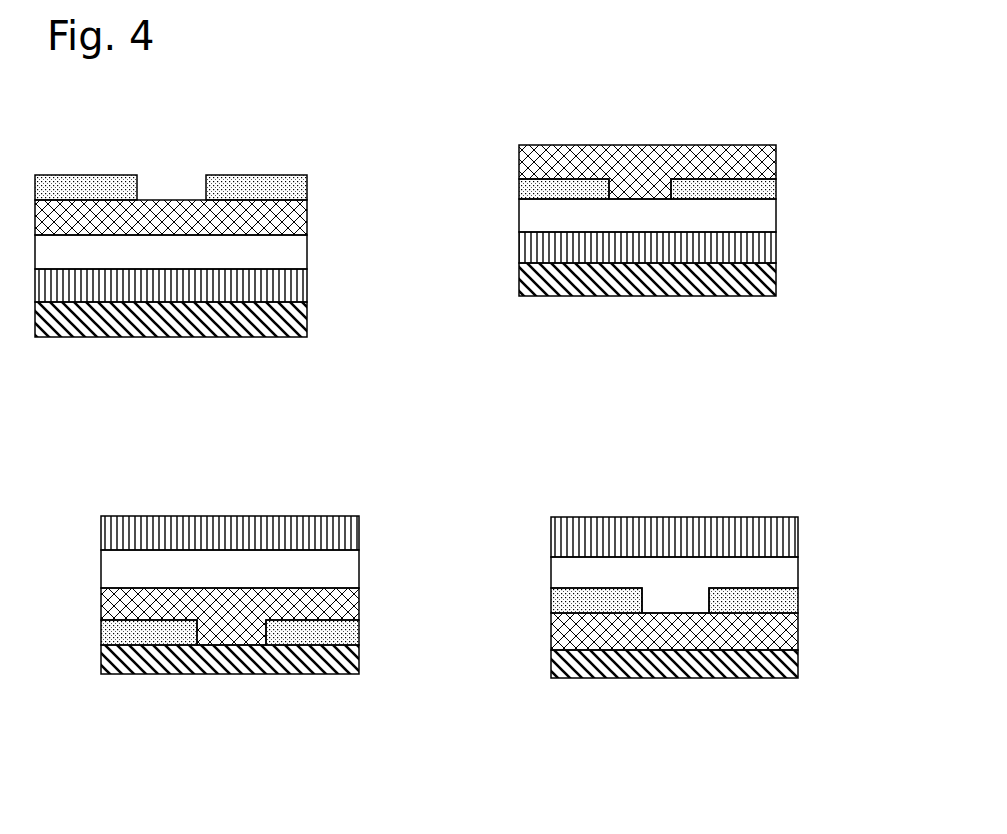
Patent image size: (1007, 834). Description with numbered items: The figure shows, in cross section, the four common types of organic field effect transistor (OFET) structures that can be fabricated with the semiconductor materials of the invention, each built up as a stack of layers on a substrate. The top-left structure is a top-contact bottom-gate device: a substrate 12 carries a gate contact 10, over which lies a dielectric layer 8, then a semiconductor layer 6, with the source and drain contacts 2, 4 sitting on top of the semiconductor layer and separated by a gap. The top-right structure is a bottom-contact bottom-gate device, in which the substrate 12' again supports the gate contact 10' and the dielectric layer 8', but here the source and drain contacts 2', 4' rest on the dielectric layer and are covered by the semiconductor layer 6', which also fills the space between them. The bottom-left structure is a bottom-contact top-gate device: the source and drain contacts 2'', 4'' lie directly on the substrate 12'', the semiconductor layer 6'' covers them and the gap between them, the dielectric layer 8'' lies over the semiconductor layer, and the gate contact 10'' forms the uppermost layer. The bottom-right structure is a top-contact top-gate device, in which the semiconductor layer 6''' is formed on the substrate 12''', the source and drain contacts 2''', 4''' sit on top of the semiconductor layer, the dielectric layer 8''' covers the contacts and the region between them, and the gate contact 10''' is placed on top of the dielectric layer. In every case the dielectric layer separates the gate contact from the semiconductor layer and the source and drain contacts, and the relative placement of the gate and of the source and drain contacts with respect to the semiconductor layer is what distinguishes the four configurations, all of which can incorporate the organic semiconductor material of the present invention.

The source contact 2 is at (86, 145).
The drain contact 4 is at (266, 148).
The semiconductor layer 6 is at (220, 208).
The dielectric layer 8 is at (220, 257).
The gate contact 10 is at (225, 295).
The substrate 12 is at (171, 360).
The source contact 2' is at (541, 144).
The drain contact 4' is at (775, 181).
The semiconductor layer 6' is at (647, 148).
The dielectric layer 8' is at (699, 224).
The gate contact 10' is at (705, 257).
The substrate 12' is at (647, 320).
The source contact 2'' is at (113, 611).
The drain contact 4'' is at (343, 638).
The semiconductor layer 6'' is at (260, 605).
The dielectric layer 8'' is at (260, 557).
The gate contact 10'' is at (230, 506).
The substrate 12'' is at (230, 682).
The source contact 2''' is at (563, 599).
The drain contact 4''' is at (792, 593).
The semiconductor layer 6''' is at (713, 624).
The dielectric layer 8''' is at (713, 565).
The gate contact 10''' is at (674, 521).
The substrate 12''' is at (674, 676).